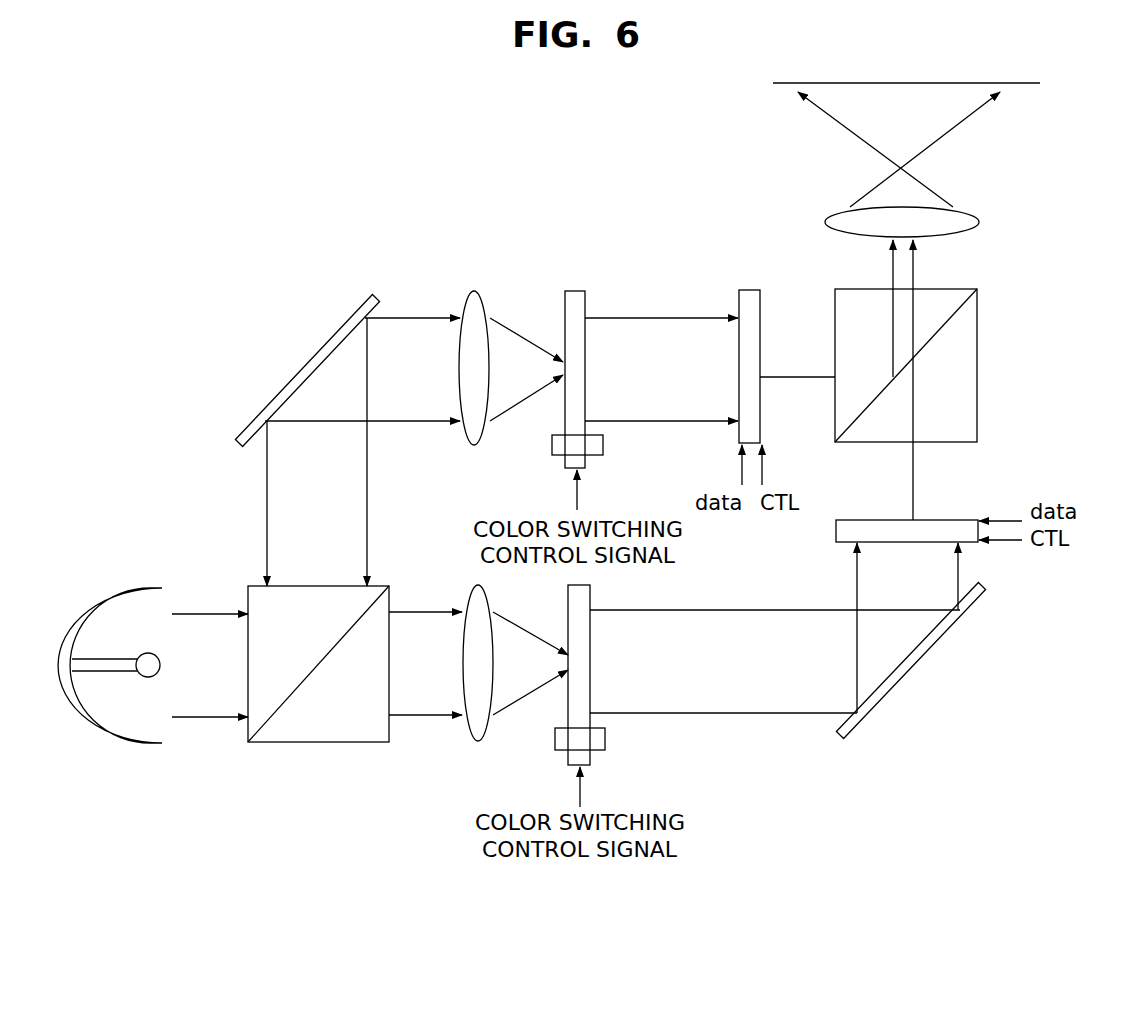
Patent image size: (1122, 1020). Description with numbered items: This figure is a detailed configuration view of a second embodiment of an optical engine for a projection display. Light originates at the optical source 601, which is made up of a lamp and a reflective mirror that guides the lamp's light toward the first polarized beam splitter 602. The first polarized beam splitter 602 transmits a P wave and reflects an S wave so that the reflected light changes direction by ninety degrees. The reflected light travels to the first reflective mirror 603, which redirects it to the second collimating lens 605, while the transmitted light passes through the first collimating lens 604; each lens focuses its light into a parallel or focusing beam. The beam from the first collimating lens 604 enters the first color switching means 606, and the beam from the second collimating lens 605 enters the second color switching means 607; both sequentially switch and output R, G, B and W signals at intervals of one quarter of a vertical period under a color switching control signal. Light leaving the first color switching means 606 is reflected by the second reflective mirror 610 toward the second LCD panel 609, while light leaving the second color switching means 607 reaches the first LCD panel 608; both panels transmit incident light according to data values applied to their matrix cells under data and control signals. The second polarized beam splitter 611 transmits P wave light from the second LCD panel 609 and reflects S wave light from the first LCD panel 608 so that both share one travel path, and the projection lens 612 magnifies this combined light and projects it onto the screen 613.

The optical source 601 is at (125, 592).
The first polarized beam splitter 602 is at (314, 742).
The first reflective mirror 603 is at (303, 366).
The first collimating lens 604 is at (479, 742).
The second collimating lens 605 is at (474, 291).
The first color switching means 606 is at (592, 604).
The second color switching means 607 is at (573, 291).
The first LCD panel 608 is at (750, 290).
The second LCD panel 609 is at (861, 519).
The second reflective mirror 610 is at (918, 667).
The second polarized beam splitter 611 is at (977, 377).
The projection lens 612 is at (979, 222).
The screen 613 is at (1040, 83).